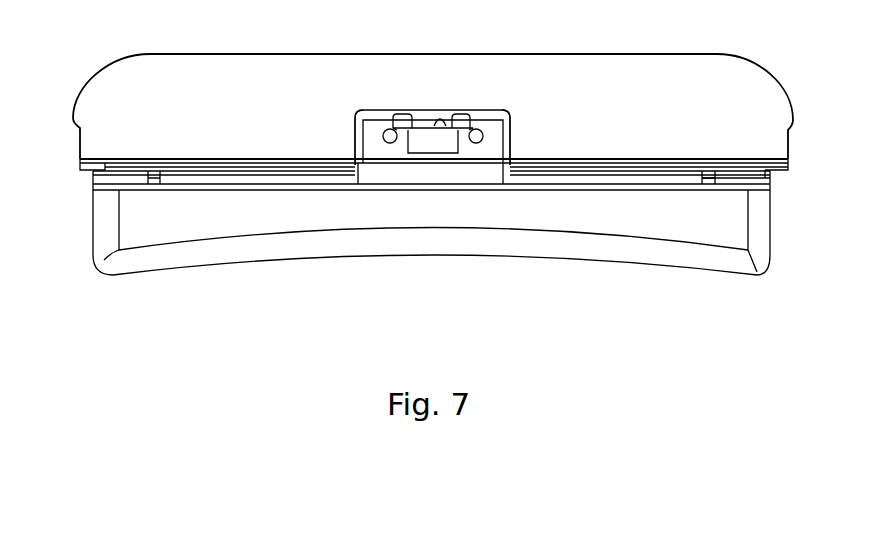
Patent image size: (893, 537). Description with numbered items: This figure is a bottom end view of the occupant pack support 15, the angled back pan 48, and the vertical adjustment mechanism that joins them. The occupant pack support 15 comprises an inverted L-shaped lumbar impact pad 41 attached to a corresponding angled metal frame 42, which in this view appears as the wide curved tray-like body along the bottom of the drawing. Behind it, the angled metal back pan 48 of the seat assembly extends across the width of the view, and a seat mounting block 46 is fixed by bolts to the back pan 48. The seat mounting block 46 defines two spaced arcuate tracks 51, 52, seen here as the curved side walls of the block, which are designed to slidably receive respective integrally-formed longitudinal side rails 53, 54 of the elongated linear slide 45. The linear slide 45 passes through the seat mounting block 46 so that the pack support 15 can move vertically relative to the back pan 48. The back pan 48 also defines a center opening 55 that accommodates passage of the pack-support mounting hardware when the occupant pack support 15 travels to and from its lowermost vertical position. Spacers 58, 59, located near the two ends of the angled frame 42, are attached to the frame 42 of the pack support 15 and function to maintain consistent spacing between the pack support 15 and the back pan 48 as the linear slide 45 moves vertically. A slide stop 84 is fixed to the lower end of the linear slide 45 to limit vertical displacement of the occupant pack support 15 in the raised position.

The occupant pack support 15 is at (78, 221).
The lumbar impact pad 41 is at (612, 226).
The angled metal frame 42 is at (238, 180).
The linear slide 45 is at (426, 122).
The seat mounting block 46 is at (373, 148).
The angled metal back pan 48 is at (642, 170).
The arcuate track 51 is at (357, 116).
The arcuate track 52 is at (512, 115).
The longitudinal side rail 53 is at (396, 144).
The longitudinal side rail 54 is at (478, 144).
The center opening 55 is at (441, 112).
The spacer 58 is at (174, 184).
The spacer 59 is at (702, 178).
The slide stop 84 is at (432, 142).